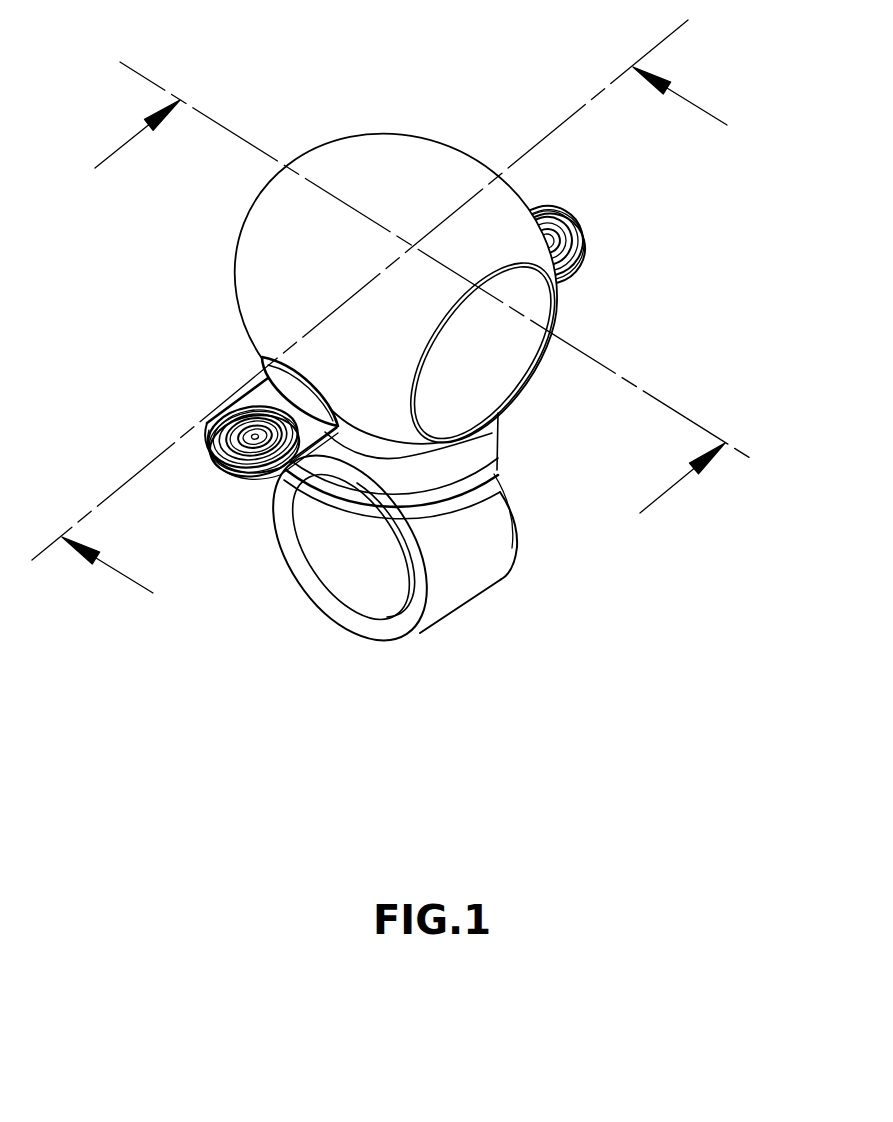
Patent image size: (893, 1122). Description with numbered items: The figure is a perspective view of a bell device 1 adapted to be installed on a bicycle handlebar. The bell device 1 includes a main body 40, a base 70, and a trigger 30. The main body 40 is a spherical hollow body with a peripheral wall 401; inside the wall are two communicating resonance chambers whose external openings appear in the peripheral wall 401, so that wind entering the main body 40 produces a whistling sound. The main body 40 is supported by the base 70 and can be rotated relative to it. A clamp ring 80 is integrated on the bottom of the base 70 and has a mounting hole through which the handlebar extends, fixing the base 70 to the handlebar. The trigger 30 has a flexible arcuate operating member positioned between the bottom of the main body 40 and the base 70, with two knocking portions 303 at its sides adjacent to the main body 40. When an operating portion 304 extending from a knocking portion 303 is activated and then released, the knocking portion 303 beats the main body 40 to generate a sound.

The bell device 1 is at (407, 366).
The trigger 30 is at (580, 258).
The knocking portion 303 is at (267, 373).
The operating portion 304 is at (580, 231).
The main body 40 is at (402, 142).
The peripheral wall 401 is at (465, 177).
The base 70 is at (480, 442).
The clamp ring 80 is at (442, 600).